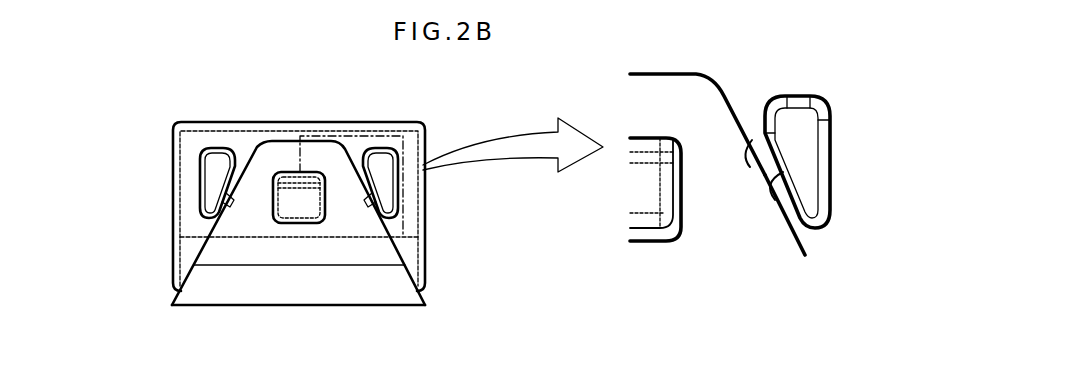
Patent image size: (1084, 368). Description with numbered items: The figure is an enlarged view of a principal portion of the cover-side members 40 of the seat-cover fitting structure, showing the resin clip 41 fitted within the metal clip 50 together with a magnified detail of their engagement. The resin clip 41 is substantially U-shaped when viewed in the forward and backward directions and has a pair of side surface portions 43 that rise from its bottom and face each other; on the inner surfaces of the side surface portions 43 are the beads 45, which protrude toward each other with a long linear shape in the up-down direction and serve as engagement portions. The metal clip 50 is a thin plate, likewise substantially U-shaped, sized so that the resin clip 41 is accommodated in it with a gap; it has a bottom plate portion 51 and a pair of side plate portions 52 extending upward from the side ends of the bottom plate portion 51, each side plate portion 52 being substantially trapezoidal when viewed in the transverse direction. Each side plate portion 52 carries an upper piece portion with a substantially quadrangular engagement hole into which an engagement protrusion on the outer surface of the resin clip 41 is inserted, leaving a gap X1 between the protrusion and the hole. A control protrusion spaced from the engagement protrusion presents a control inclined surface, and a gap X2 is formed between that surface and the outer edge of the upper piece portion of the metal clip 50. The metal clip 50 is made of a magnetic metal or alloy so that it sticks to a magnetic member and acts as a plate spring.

The clip (fixing member) 40 is at (126, 118).
The resin clip 41 is at (192, 113).
The side surface portions 43 is at (192, 222).
The beads 45 is at (304, 137).
The metal clip 50 is at (198, 310).
The bottom plate portion 51 is at (313, 306).
The side plate portions 52 is at (360, 273).
The gap X1 is at (674, 217).
The gap X2 is at (795, 215).